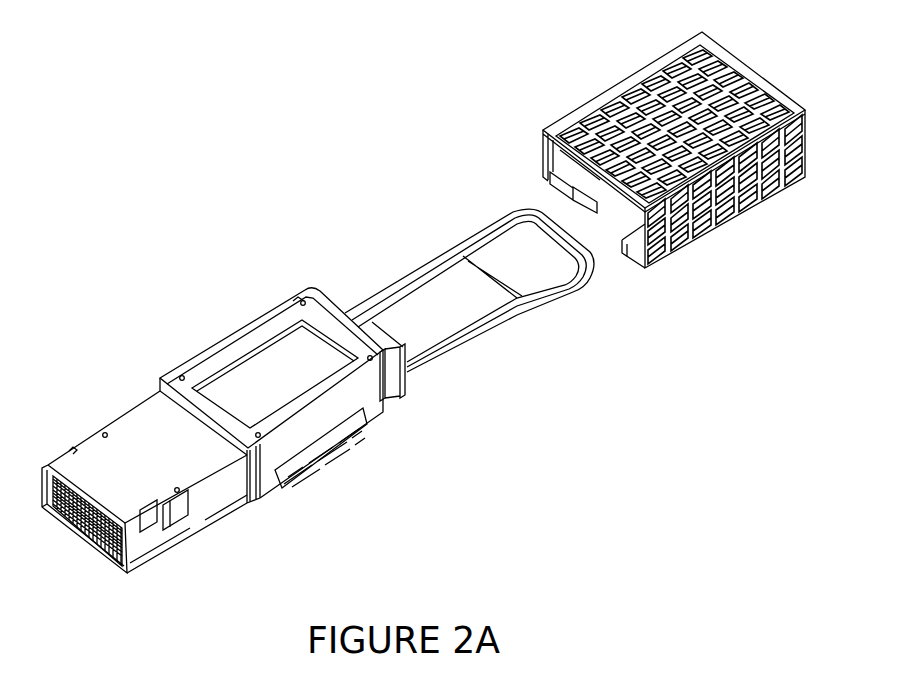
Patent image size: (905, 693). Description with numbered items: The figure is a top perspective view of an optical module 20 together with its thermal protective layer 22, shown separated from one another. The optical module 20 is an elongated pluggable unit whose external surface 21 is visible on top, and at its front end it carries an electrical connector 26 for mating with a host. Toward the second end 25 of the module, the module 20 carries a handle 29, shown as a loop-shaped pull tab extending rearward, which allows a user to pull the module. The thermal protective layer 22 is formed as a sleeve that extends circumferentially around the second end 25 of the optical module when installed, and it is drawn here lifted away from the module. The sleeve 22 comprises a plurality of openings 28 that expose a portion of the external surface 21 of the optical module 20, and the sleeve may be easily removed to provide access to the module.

The optical module 20 is at (248, 336).
The external surface 21 is at (275, 374).
The thermal protective layer 22 is at (667, 134).
The second end 25 is at (388, 400).
The electrical connector 26 is at (92, 530).
The openings 28 is at (668, 78).
The handle 29 is at (441, 255).